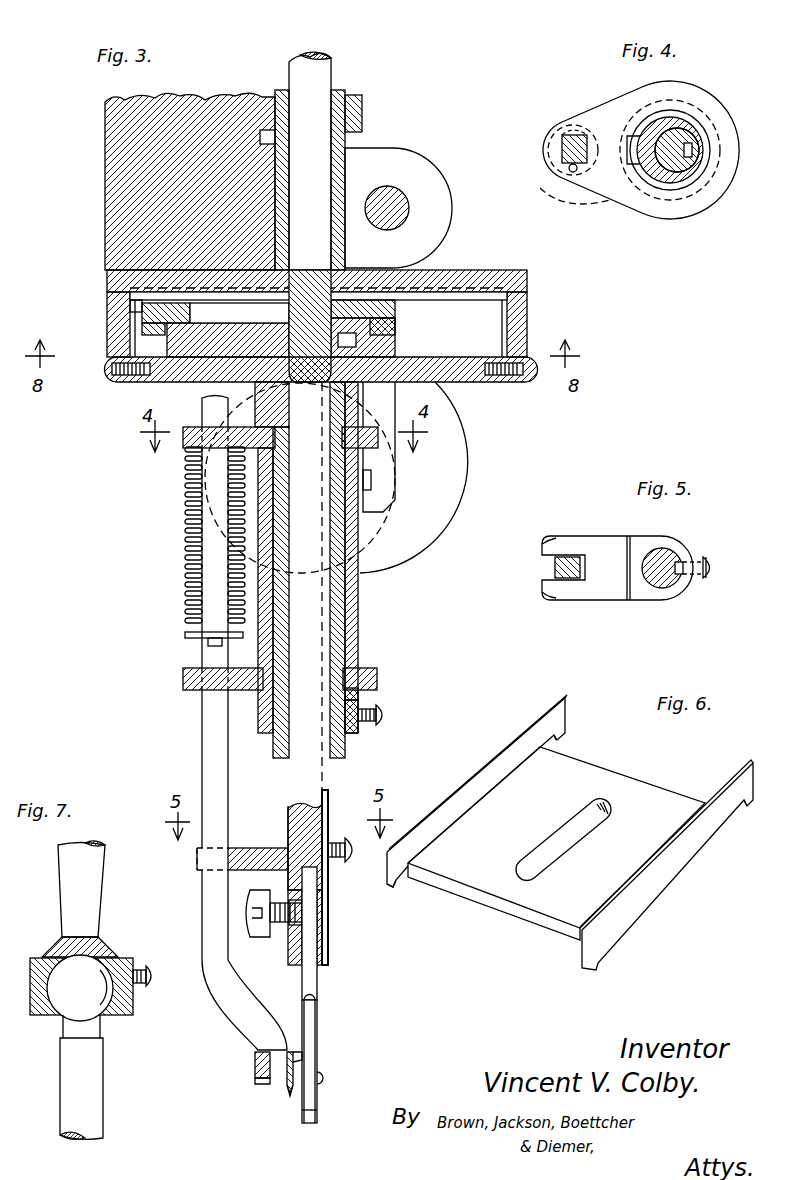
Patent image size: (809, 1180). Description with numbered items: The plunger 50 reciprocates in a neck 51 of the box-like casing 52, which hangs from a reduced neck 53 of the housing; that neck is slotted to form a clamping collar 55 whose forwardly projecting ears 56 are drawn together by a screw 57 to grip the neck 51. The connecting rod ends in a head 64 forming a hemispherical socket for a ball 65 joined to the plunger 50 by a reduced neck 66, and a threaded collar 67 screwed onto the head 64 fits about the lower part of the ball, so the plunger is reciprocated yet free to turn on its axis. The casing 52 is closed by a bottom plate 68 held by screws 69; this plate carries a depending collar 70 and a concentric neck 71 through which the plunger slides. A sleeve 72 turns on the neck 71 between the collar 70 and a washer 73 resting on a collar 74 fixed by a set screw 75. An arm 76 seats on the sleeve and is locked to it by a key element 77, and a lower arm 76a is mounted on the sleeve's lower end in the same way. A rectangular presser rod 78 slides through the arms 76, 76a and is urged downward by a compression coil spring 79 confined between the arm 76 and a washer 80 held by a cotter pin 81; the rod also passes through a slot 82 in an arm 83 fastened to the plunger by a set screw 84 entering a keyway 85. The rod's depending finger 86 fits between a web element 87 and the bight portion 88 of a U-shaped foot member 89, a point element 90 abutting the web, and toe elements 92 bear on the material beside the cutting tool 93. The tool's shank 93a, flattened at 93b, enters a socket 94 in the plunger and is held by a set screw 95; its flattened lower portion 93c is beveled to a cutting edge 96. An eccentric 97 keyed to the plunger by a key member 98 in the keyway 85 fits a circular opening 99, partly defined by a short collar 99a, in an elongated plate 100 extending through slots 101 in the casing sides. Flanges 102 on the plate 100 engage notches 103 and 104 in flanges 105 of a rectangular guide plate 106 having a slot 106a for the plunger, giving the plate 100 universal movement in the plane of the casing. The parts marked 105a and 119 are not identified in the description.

In FIG. 3, the plunger 50 is at (335, 78).
In FIG. 4, the plunger 50 is at (650, 118).
In FIG. 5, the plunger 50 is at (680, 556).
In FIG. 7, the plunger 50 is at (86, 1094).
In FIG. 3, the neck 51 is at (355, 110).
In FIG. 3, the box-like casing 52 is at (487, 270).
In FIG. 3, the reduced neck 53 is at (362, 128).
In FIG. 3, the clamping collar 55 is at (215, 218).
In FIG. 3, the forwardly projecting ears 56 is at (392, 160).
In FIG. 3, the screw 57 is at (395, 206).
In FIG. 7, the head 64 is at (110, 950).
In FIG. 7, the ball 65 is at (68, 1003).
In FIG. 7, the reduced neck 66 is at (98, 1030).
In FIG. 7, the interiorly threaded collar 67 is at (150, 968).
In FIG. 3, the bottom plate 68 is at (492, 378).
In FIG. 3, the screws 69 is at (532, 360).
In FIG. 3, the depending collar 70 is at (360, 410).
In FIG. 3, the concentric neck 71 is at (340, 606).
In FIG. 4, the concentric neck 71 is at (662, 190).
In FIG. 3, the sleeve 72 is at (358, 632).
In FIG. 4, the sleeve 72 is at (705, 195).
In FIG. 3, the washer 73 is at (360, 694).
In FIG. 3, the collar 74 is at (358, 726).
In FIG. 3, the set screw 75 is at (385, 715).
In FIG. 3, the arm 76 is at (395, 452).
In FIG. 4, the arm 76 is at (731, 165).
In FIG. 3, the lower arm 76a is at (378, 678).
In FIG. 4, the key element 77 is at (632, 150).
In FIG. 3, the presser rod 78 is at (202, 745).
In FIG. 4, the presser rod 78 is at (560, 148).
In FIG. 5, the presser rod 78 is at (555, 568).
In FIG. 3, the compression coil spring 79 is at (183, 568).
In FIG. 4, the compression coil spring 79 is at (575, 124).
In FIG. 3, the washer 80 is at (185, 635).
In FIG. 4, the washer 80 is at (590, 200).
In FIG. 3, the cotter pin 81 is at (210, 644).
In FIG. 4, the cotter pin 81 is at (565, 173).
In FIG. 3, the slot 82 is at (197, 860).
In FIG. 5, the slot 82 is at (558, 540).
In FIG. 3, the arm 83 is at (262, 850).
In FIG. 5, the arm 83 is at (612, 576).
In FIG. 3, the set screw 84 is at (350, 860).
In FIG. 5, the set screw 84 is at (715, 568).
In FIG. 3, the keyway 85 is at (328, 935).
In FIG. 4, the keyway 85 is at (692, 148).
In FIG. 5, the keyway 85 is at (668, 582).
In FIG. 3, the depending finger 86 is at (287, 1068).
In FIG. 3, the web element 87 is at (298, 1058).
In FIG. 3, the bight portion 88 is at (255, 1060).
In FIG. 3, the foot member 89 is at (258, 1082).
In FIG. 3, the point element 90 is at (291, 1100).
In FIG. 3, the toe elements 92 is at (325, 1078).
In FIG. 3, the cutting tool 93 is at (316, 1100).
In FIG. 3, the shank 93a is at (318, 985).
In FIG. 3, the flattened side 93b is at (295, 966).
In FIG. 3, the lower portion 93c is at (322, 1060).
In FIG. 3, the socket 94 is at (290, 892).
In FIG. 3, the set screw 95 is at (262, 937).
In FIG. 3, the cutting edge 96 is at (310, 1123).
In FIG. 3, the eccentric 97 is at (255, 410).
In FIG. 3, the key member 98 is at (356, 336).
In FIG. 3, the circular opening 99 is at (175, 346).
In FIG. 3, the short collar 99a is at (160, 336).
In FIG. 3, the operating and guide plate 100 is at (122, 372).
In FIG. 3, the slots 101 is at (136, 302).
In FIG. 3, the flanges 102 is at (150, 318).
In FIG. 3, the notch 103 is at (392, 312).
In FIG. 6, the notch 103 is at (562, 740).
In FIG. 6, the notch 104 is at (396, 887).
In FIG. 3, the flanges 105 is at (402, 270).
In FIG. 6, the flanges 105 is at (506, 745).
In FIG. 3, the housing wall 105a is at (528, 298).
In FIG. 3, the guide plate 106 is at (140, 292).
In FIG. 6, the guide plate 106 is at (515, 920).
In FIG. 3, the slot 106a is at (200, 316).
In FIG. 6, the slot 106a is at (556, 832).
In FIG. 7, the upper shaft 119 is at (75, 908).